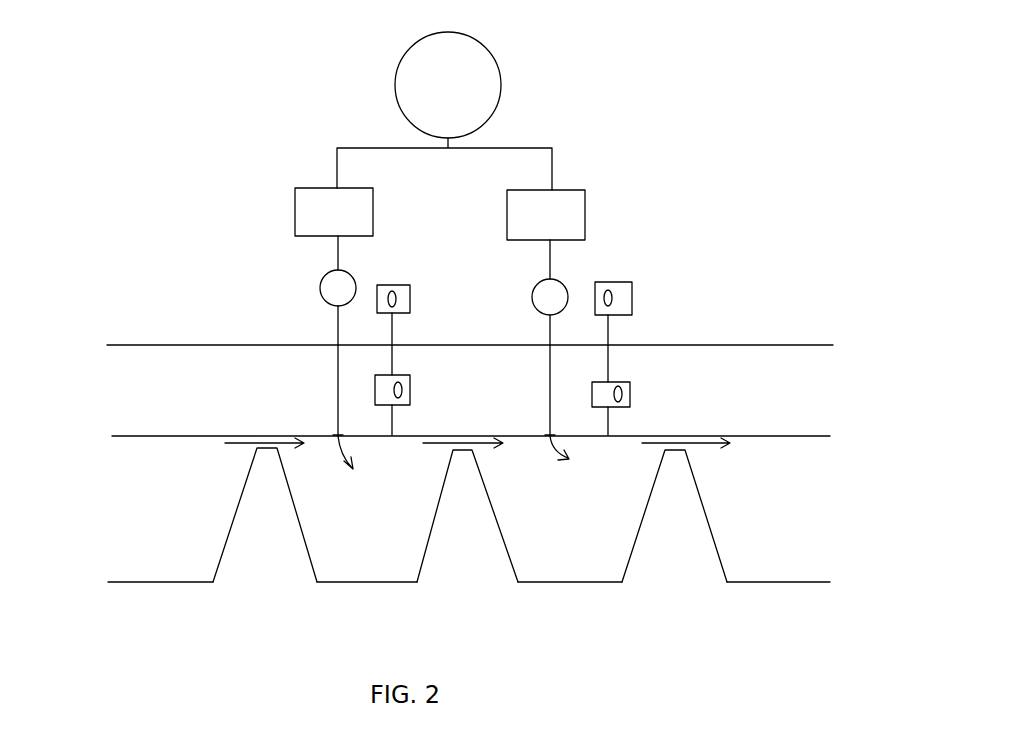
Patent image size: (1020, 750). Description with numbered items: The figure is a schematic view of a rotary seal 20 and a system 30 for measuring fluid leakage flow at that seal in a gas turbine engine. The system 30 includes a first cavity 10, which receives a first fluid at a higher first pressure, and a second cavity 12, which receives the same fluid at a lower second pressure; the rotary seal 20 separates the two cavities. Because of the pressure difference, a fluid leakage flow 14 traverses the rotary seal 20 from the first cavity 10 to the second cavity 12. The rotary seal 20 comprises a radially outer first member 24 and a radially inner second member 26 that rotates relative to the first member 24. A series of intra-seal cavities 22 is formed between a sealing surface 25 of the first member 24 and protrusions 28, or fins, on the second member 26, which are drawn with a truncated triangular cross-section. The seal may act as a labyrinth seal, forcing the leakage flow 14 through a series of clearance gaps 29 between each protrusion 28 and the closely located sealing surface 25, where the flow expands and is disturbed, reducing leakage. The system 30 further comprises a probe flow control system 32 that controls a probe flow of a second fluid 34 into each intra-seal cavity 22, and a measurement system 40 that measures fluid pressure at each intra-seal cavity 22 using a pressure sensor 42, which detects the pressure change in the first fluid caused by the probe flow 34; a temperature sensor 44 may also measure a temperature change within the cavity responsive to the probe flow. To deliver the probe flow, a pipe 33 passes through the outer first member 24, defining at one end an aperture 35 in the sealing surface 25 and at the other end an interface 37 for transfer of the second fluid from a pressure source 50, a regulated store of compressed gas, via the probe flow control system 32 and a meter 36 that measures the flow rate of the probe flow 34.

The first cavity 10 is at (150, 507).
The second cavity 12 is at (775, 505).
The fluid leakage flow 14 is at (235, 450).
The rotary seal 20 is at (90, 397).
The intra-seal cavities 22 is at (469, 555).
The first member 24 is at (168, 423).
The sealing surface 25 is at (135, 436).
The second member 26 is at (153, 580).
The protrusions 28 is at (470, 515).
The clearance gaps 29 is at (258, 436).
The system 30 is at (727, 180).
The probe flow control system 32 is at (295, 200).
The pipe 33 is at (338, 380).
The probe flow of the second fluid 34 is at (355, 452).
The aperture 35 is at (338, 430).
The meter 36 is at (320, 290).
The interface 37 is at (338, 343).
The measurement system 40 is at (410, 285).
The pressure sensor 42 is at (390, 291).
The temperature sensor 44 is at (397, 385).
The pressure source 50 is at (502, 68).